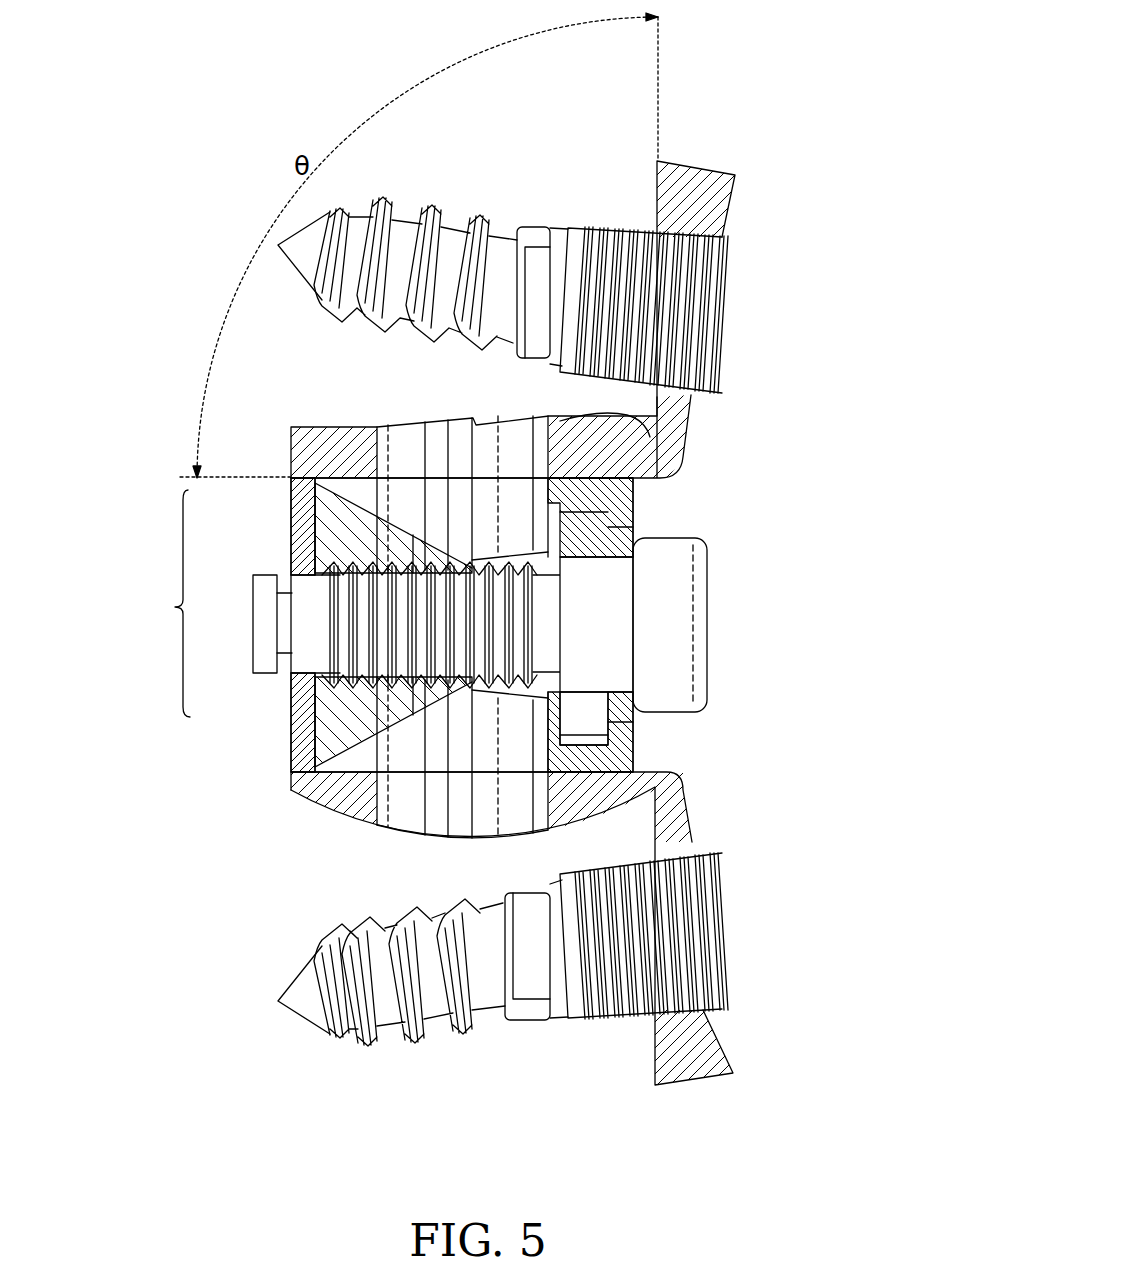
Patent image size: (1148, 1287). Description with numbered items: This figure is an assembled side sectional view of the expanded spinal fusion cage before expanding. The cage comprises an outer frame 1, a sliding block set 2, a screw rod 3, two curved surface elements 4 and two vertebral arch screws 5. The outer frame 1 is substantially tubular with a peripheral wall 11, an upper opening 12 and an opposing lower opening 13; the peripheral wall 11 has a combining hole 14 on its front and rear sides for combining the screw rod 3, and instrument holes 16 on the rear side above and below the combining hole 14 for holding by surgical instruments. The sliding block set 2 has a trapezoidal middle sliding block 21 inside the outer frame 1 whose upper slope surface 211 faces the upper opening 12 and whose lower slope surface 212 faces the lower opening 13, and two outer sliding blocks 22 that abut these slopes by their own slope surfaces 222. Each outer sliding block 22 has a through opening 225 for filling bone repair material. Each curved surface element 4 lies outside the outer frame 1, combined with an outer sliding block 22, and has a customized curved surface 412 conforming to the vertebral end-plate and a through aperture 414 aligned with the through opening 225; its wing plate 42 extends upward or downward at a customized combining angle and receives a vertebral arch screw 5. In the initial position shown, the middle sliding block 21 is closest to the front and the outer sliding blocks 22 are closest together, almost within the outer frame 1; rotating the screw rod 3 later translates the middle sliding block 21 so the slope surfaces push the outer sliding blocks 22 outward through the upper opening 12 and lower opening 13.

The outer frame 1 is at (283, 752).
The peripheral wall 11 is at (290, 770).
The upper opening 12 is at (340, 487).
The lower opening 13 is at (665, 771).
The combining hole 14 is at (633, 707).
The instrument hole 16 is at (622, 517).
The sliding block set 2 is at (343, 649).
The middle sliding block 21 is at (324, 537).
The outer sliding block 22 is at (336, 623).
The upper slope surface 211 is at (365, 472).
The lower slope surface 212 is at (370, 735).
The slope surface 222 is at (338, 490).
The through opening 225 is at (440, 736).
The screw rod 3 is at (684, 619).
The curved surface element 4 is at (708, 444).
The customized curved surface 412 is at (640, 430).
The through aperture 414 is at (463, 788).
The wing plate 42 is at (707, 207).
The vertebral arch screw 5 is at (494, 219).